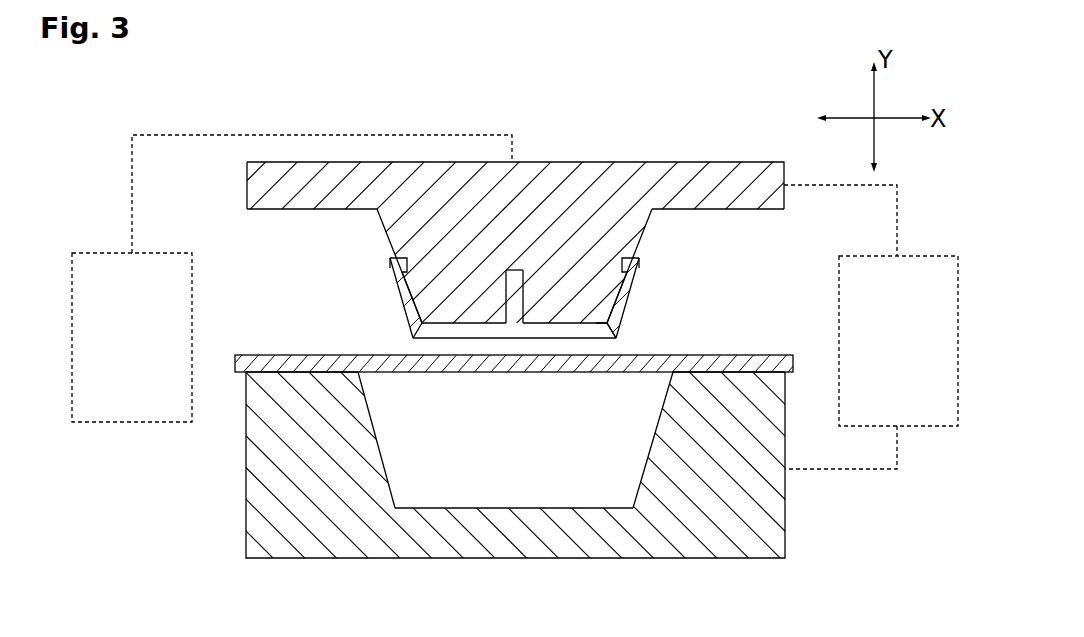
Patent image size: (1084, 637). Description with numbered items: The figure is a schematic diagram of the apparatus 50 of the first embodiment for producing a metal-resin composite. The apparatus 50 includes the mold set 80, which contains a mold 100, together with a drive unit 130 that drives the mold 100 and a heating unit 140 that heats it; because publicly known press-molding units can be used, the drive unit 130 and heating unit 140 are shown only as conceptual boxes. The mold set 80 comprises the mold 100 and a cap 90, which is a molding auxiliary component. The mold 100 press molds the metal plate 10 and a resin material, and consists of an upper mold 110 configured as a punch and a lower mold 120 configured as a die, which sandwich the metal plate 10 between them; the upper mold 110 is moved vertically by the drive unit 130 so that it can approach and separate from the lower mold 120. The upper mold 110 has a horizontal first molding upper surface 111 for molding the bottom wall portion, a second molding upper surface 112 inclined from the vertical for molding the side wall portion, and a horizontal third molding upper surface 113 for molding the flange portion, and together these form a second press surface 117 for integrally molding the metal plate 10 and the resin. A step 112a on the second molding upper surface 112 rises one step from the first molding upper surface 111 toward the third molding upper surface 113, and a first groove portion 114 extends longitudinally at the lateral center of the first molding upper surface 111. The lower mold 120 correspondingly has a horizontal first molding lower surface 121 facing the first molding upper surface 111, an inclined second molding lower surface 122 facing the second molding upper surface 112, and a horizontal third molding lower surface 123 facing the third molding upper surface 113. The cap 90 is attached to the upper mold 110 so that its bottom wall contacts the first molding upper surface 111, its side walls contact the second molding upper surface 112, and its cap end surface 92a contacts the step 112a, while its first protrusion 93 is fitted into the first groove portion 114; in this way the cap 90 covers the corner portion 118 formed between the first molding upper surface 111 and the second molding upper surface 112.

The metal plate 10 is at (235, 371).
The apparatus 50 is at (250, 128).
The mold set 80 is at (710, 135).
The cap 90 is at (420, 333).
The cap end surface 92a is at (638, 256).
The first protrusion 93 is at (518, 270).
The mold 100 is at (542, 355).
The upper mold 110 is at (308, 161).
The first molding upper surface 111 is at (538, 322).
The second molding upper surface 112 is at (623, 305).
The step 112a is at (634, 285).
The third molding upper surface 113 is at (720, 212).
The first groove portion 114 is at (503, 315).
The second press surface 117 is at (606, 332).
The corner portion 118 is at (632, 256).
The lower mold 120 is at (527, 558).
The first molding lower surface 121 is at (525, 508).
The second molding lower surface 122 is at (654, 432).
The third molding lower surface 123 is at (775, 354).
The drive unit 130 is at (125, 424).
The heating unit 140 is at (928, 428).